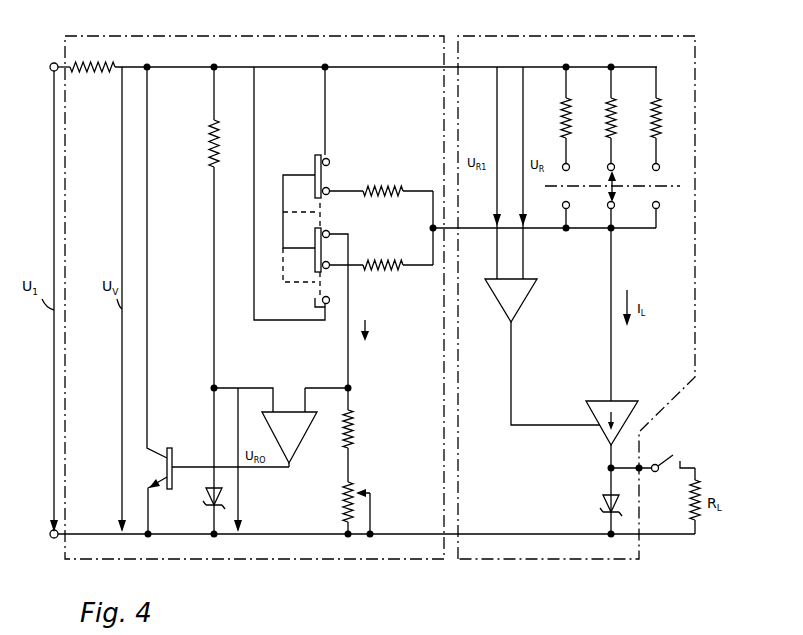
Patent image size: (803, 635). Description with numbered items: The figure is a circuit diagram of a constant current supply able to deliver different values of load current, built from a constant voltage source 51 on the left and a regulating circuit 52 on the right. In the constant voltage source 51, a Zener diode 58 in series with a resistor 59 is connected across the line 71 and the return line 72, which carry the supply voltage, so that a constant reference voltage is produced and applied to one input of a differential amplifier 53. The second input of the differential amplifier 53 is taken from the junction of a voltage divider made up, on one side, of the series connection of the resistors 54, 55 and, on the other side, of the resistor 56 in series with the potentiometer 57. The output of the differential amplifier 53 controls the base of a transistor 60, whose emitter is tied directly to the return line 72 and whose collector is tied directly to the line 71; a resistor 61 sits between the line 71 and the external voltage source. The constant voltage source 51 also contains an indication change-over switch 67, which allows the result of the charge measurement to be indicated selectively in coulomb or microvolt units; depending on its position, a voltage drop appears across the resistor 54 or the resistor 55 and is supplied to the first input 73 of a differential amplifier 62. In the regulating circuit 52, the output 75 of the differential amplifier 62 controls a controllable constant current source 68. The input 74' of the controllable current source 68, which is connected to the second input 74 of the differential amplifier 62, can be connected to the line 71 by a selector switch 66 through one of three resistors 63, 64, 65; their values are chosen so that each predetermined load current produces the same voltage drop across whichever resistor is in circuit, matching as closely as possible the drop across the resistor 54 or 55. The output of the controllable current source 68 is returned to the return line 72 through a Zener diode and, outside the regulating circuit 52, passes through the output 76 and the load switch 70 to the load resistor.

The constant voltage source 51 is at (295, 559).
The regulating circuit 52 is at (551, 559).
The differential amplifier 53 is at (303, 440).
The resistor 54 is at (381, 182).
The resistor 55 is at (381, 256).
The resistor 56 is at (355, 423).
The potentiometer 57 is at (356, 483).
The Zener diode 58 is at (207, 500).
The resistor 59 is at (216, 135).
The transistor 60 is at (173, 462).
The resistor 61 is at (92, 79).
The differential amplifier 62 is at (525, 298).
The resistor 63 is at (560, 122).
The resistor 64 is at (605, 122).
The resistor 65 is at (650, 122).
The selector switch 66 is at (612, 196).
The indication change-over switch 67 is at (283, 223).
The controllable constant current source 68 is at (600, 432).
The load switch 70 is at (670, 458).
The line 71 is at (386, 67).
The return line 72 is at (431, 536).
The first input of differential amplifier 62 73 is at (497, 268).
The second input of differential amplifier 62 74 is at (533, 173).
The input of controllable current source 74' is at (629, 314).
The output of differential amplifier 62 75 is at (512, 371).
The output 76 is at (641, 471).